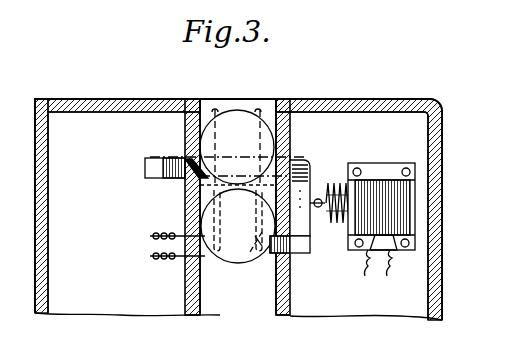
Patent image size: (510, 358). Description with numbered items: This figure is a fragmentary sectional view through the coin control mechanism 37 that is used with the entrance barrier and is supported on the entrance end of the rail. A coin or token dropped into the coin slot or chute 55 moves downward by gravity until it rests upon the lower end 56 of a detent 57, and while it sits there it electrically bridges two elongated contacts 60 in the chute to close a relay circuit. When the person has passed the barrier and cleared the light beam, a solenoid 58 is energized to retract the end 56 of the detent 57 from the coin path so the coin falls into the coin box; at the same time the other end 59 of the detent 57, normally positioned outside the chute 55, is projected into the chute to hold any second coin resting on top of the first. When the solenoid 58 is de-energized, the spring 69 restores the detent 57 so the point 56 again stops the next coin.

The coin control mechanism 37 is at (360, 100).
The coin slot or chute 55 is at (200, 109).
The elongated contacts 60 is at (258, 106).
The other end of detent 59 is at (176, 158).
The detent 57 is at (306, 161).
The spring 69 is at (338, 188).
The solenoid 58 is at (382, 183).
The lower end of detent 56 is at (290, 250).